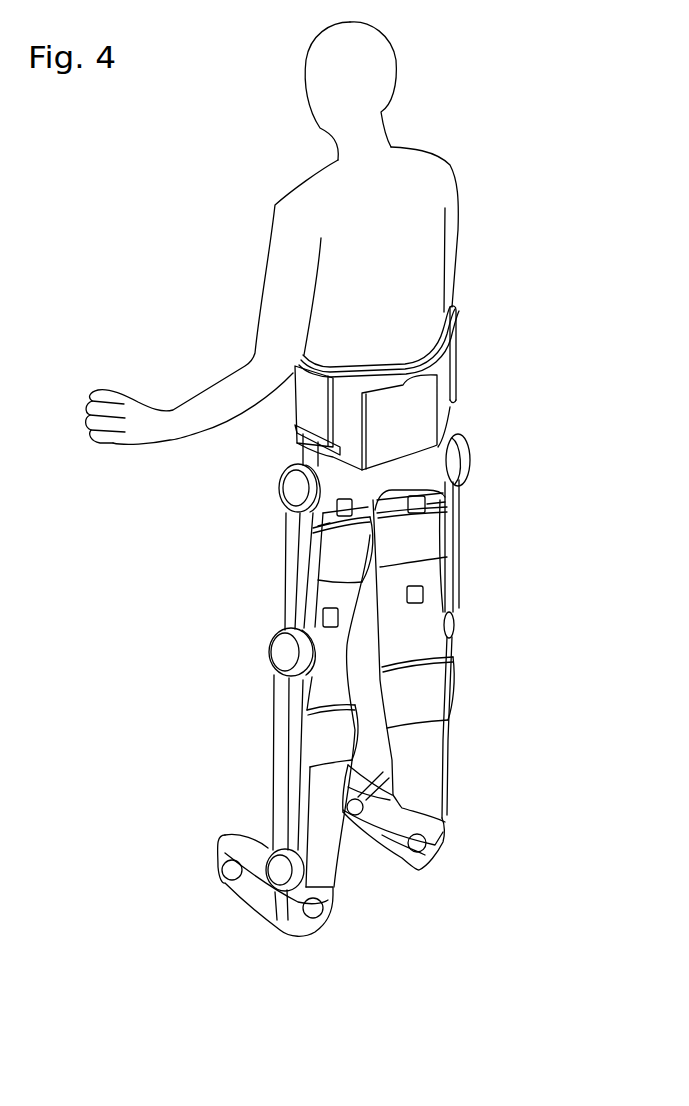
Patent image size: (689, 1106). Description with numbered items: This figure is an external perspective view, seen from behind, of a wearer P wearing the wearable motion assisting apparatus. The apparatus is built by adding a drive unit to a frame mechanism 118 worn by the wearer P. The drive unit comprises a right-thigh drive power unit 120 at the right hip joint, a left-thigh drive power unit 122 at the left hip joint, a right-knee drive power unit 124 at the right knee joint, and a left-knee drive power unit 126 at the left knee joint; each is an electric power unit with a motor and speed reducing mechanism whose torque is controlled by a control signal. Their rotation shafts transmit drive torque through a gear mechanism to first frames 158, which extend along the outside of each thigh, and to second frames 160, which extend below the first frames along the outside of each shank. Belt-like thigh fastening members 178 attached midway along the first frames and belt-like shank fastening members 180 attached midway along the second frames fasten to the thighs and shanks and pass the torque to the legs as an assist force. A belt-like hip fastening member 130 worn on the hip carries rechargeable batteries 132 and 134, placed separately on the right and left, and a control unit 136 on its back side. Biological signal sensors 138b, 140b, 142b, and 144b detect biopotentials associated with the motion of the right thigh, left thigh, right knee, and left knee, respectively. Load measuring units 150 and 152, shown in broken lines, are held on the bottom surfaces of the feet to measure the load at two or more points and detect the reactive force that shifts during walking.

The wearer P is at (272, 454).
The frame mechanism 118 is at (268, 571).
The right-thigh drive power unit 120 is at (464, 452).
The left-thigh drive power unit 122 is at (282, 490).
The right-knee drive power unit 124 is at (455, 613).
The left-knee drive power unit 126 is at (263, 638).
The hip fastening member 130 is at (450, 410).
The battery 132 is at (457, 330).
The battery 134 is at (305, 393).
The control unit 136 is at (440, 378).
The biological signal sensor 138b is at (445, 502).
The biological signal sensor 140b is at (318, 526).
The biological signal sensor 142b is at (420, 604).
The biological signal sensor 144b is at (330, 627).
The load measuring unit 150 is at (444, 832).
The load measuring unit 152 is at (347, 897).
The first frame 158 is at (335, 509).
The second frame 160 is at (288, 793).
The thigh fastening member 178 is at (333, 562).
The shank fastening member 180 is at (323, 738).